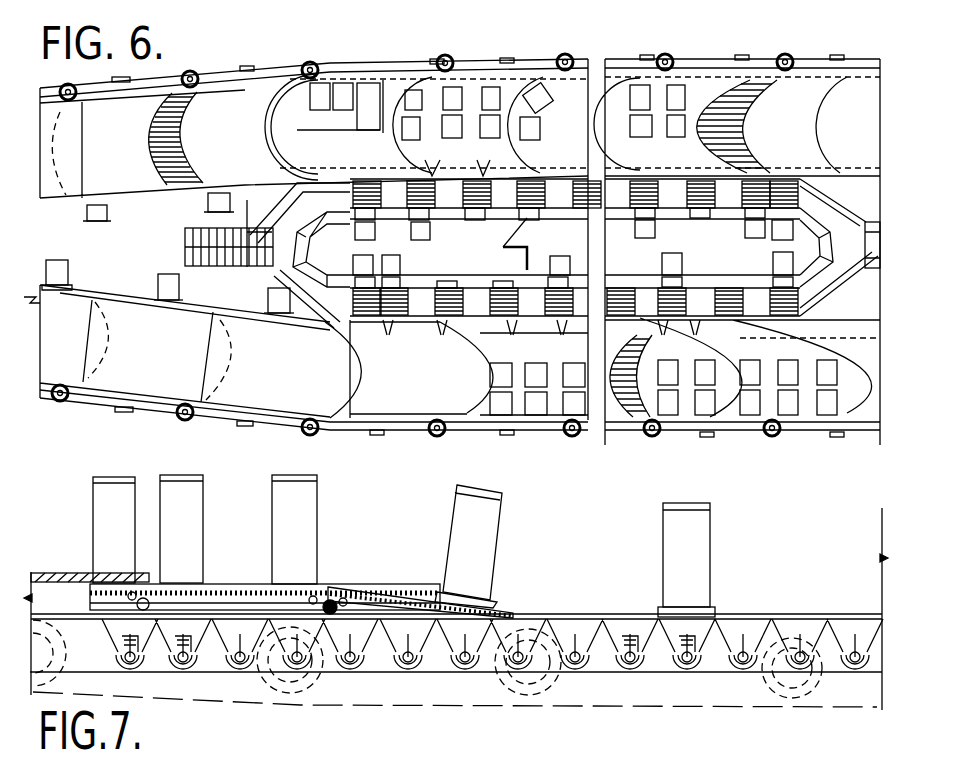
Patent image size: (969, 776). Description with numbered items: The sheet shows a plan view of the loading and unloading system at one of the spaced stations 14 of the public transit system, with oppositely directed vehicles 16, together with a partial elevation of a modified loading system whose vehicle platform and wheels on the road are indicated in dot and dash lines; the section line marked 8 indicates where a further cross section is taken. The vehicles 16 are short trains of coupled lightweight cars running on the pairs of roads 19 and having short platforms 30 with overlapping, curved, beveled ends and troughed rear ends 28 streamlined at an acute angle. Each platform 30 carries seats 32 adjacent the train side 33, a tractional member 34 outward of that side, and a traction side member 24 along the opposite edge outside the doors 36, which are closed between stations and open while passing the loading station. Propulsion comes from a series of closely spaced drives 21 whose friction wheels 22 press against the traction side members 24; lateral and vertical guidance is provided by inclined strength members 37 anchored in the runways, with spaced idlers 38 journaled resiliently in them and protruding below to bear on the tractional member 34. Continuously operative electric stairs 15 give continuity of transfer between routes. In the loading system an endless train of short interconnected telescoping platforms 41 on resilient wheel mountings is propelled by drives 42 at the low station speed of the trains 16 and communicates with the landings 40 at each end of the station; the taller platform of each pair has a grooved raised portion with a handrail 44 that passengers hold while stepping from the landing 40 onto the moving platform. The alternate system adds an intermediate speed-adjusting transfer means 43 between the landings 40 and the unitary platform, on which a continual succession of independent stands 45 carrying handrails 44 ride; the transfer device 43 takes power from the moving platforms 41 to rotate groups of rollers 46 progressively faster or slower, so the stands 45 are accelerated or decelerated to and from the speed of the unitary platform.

In FIG. 6, the section line 8- 8 is at (248, 5).
In FIG. 7, the section line 8- 8 is at (520, 462).
In FIG. 7, the station 14 is at (418, 688).
In FIG. 6, the electric stairs 15 is at (209, 233).
In FIG. 6, the vehicle 16 is at (262, 153).
In FIG. 7, the road 19 is at (600, 710).
In FIG. 6, the drive 21 is at (62, 258).
In FIG. 6, the friction wheel 22 is at (166, 306).
In FIG. 6, the traction side member 24 is at (158, 193).
In FIG. 6, the troughed rear end 28 is at (172, 133).
In FIG. 6, the platform 30 is at (413, 394).
In FIG. 7, the platform 30 is at (573, 613).
In FIG. 6, the seat 32 is at (455, 93).
In FIG. 6, the train side 33 is at (505, 64).
In FIG. 6, the tractional member 34 is at (378, 70).
In FIG. 6, the door 36 is at (440, 172).
In FIG. 6, the inclined strength member 37 is at (275, 70).
In FIG. 6, the idler 38 is at (192, 72).
In FIG. 7, the landing 40 is at (52, 573).
In FIG. 6, the platform 41 is at (538, 280).
In FIG. 7, the platform 41 is at (793, 617).
In FIG. 6, the drive 42 is at (650, 243).
In FIG. 7, the transfer means 43 is at (213, 600).
In FIG. 6, the handrail 44 is at (443, 287).
In FIG. 7, the handrail 44 is at (668, 510).
In FIG. 7, the stand 45 is at (493, 603).
In FIG. 7, the roller 46 is at (362, 594).